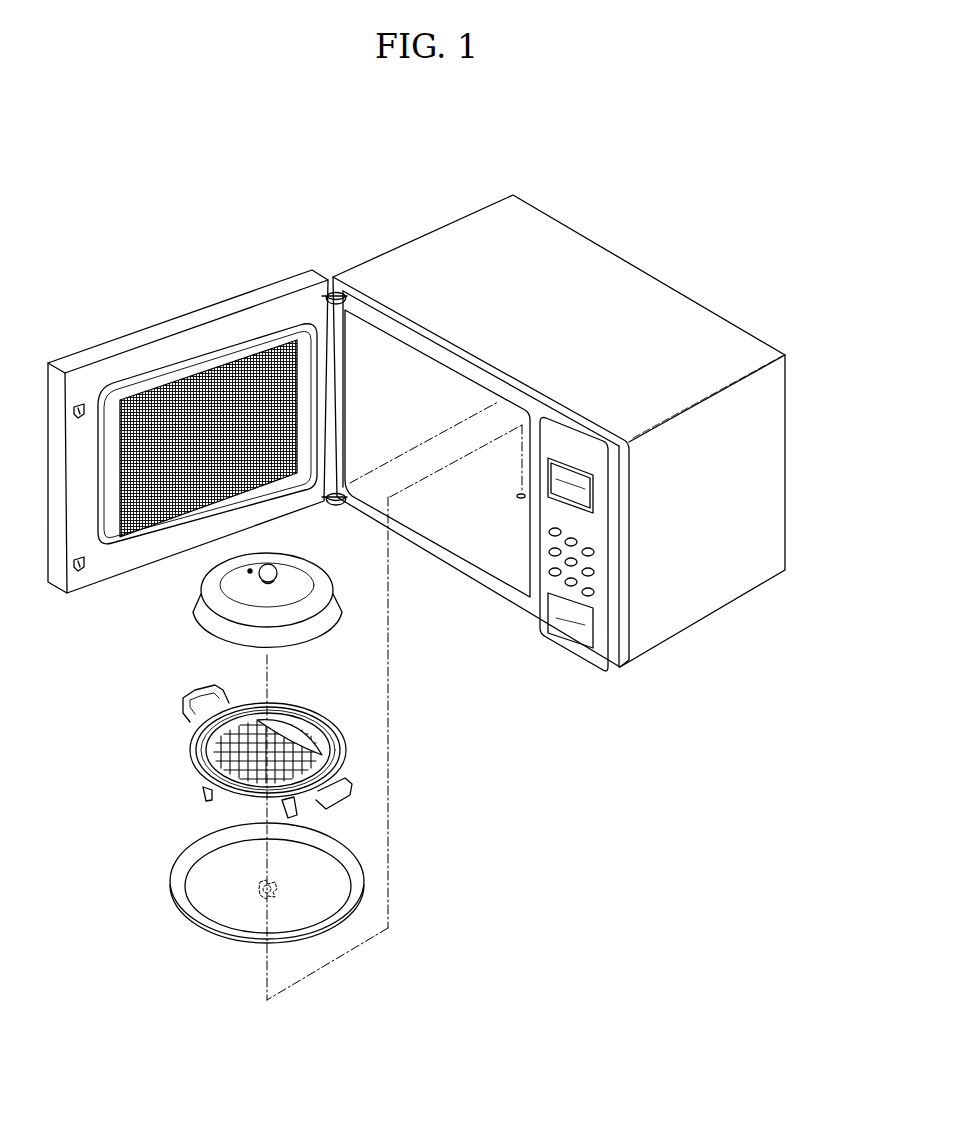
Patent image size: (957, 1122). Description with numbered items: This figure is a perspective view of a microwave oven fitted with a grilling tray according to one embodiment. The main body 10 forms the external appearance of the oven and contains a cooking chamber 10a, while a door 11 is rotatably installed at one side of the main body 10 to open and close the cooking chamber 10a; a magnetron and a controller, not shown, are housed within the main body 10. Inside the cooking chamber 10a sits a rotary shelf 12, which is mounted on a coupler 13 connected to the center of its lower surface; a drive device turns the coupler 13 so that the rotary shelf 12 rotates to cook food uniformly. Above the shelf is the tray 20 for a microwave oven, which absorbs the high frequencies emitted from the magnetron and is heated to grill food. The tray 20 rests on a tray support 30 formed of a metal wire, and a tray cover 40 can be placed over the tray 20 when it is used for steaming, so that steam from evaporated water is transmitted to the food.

The main body 10 is at (413, 253).
The cooking chamber 10a is at (498, 504).
The door 11 is at (175, 320).
The rotary shelf 12 is at (350, 863).
The coupler 13 is at (267, 900).
The tray for a microwave oven 20 is at (303, 735).
The tray support 30 is at (345, 760).
The tray cover 40 is at (343, 616).